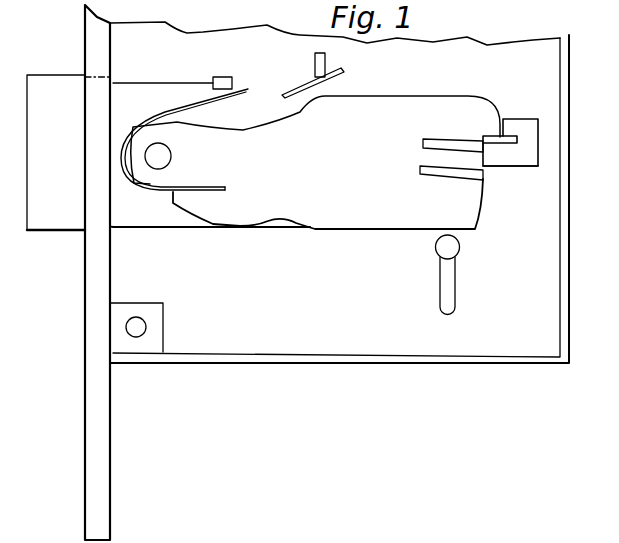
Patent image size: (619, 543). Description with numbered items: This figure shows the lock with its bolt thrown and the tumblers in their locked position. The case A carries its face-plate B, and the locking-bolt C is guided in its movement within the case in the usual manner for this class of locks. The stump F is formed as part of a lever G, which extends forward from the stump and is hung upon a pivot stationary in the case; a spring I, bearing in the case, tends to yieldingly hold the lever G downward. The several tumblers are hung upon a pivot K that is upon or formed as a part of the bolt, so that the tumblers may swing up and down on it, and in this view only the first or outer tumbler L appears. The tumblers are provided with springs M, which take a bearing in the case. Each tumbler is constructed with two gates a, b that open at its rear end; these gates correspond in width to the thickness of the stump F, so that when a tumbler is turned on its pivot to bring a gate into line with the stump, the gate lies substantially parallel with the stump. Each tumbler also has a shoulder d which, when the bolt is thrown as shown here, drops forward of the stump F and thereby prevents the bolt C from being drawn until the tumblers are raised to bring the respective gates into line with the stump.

The case A is at (339, 192).
The face-plate B is at (86, 272).
The locking-bolt C is at (69, 152).
The stump F is at (505, 133).
The lever G is at (510, 156).
The spring I is at (316, 75).
The pivot K is at (184, 139).
The first or outer tumbler L is at (315, 162).
The tumbler springs M is at (238, 88).
The gate a is at (421, 143).
The gate b is at (418, 170).
The shoulder d is at (484, 135).